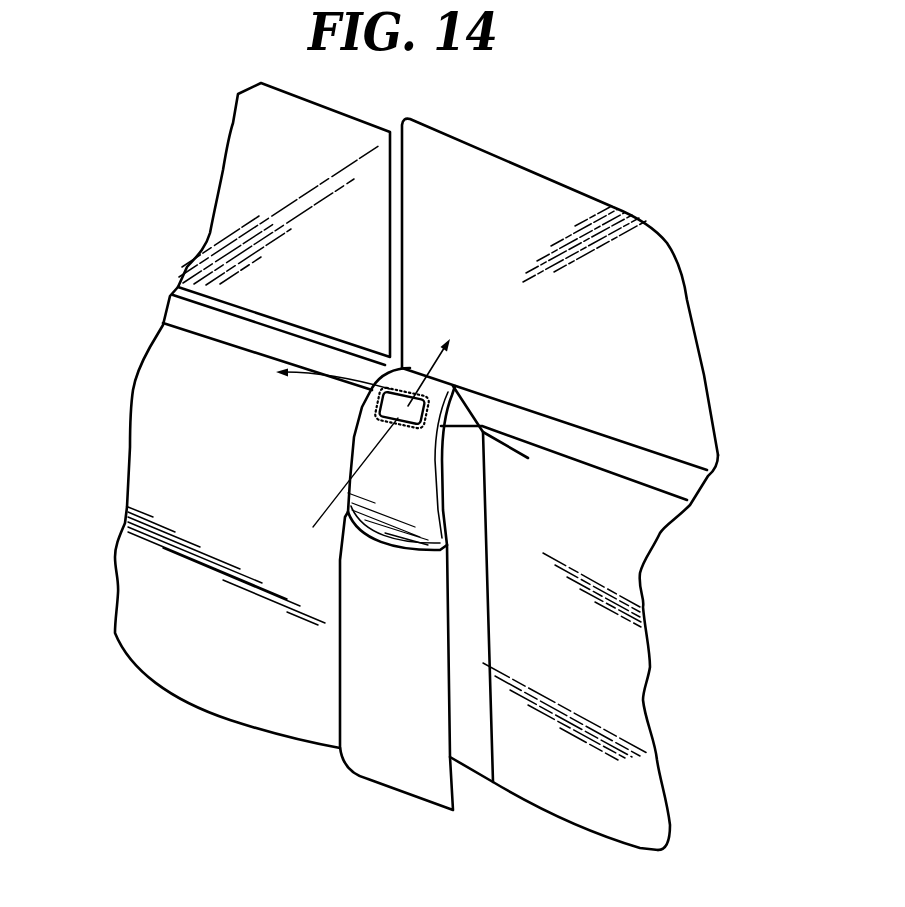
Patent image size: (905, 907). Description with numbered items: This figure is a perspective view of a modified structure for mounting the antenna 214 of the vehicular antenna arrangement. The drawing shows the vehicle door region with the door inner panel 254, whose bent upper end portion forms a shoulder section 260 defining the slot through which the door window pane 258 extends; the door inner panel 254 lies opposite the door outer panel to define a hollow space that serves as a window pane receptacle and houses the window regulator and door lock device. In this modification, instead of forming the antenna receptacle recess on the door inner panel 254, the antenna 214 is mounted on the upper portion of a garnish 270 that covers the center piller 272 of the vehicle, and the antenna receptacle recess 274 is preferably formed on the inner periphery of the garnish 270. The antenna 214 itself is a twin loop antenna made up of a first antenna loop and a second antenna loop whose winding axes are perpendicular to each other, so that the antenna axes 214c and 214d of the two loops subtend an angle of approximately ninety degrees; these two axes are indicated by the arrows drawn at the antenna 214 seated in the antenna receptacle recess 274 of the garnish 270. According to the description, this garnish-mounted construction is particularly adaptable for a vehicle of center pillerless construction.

The door inner panel 254 is at (125, 558).
The door window pane 258 is at (678, 297).
The shoulder section 260 is at (169, 306).
The garnish 270 is at (357, 447).
The center piller 272 is at (347, 682).
The antenna receptacle recess 274 is at (405, 430).
The antenna 214 is at (432, 390).
The antenna axis 214c is at (457, 353).
The antenna axis 214d is at (296, 373).